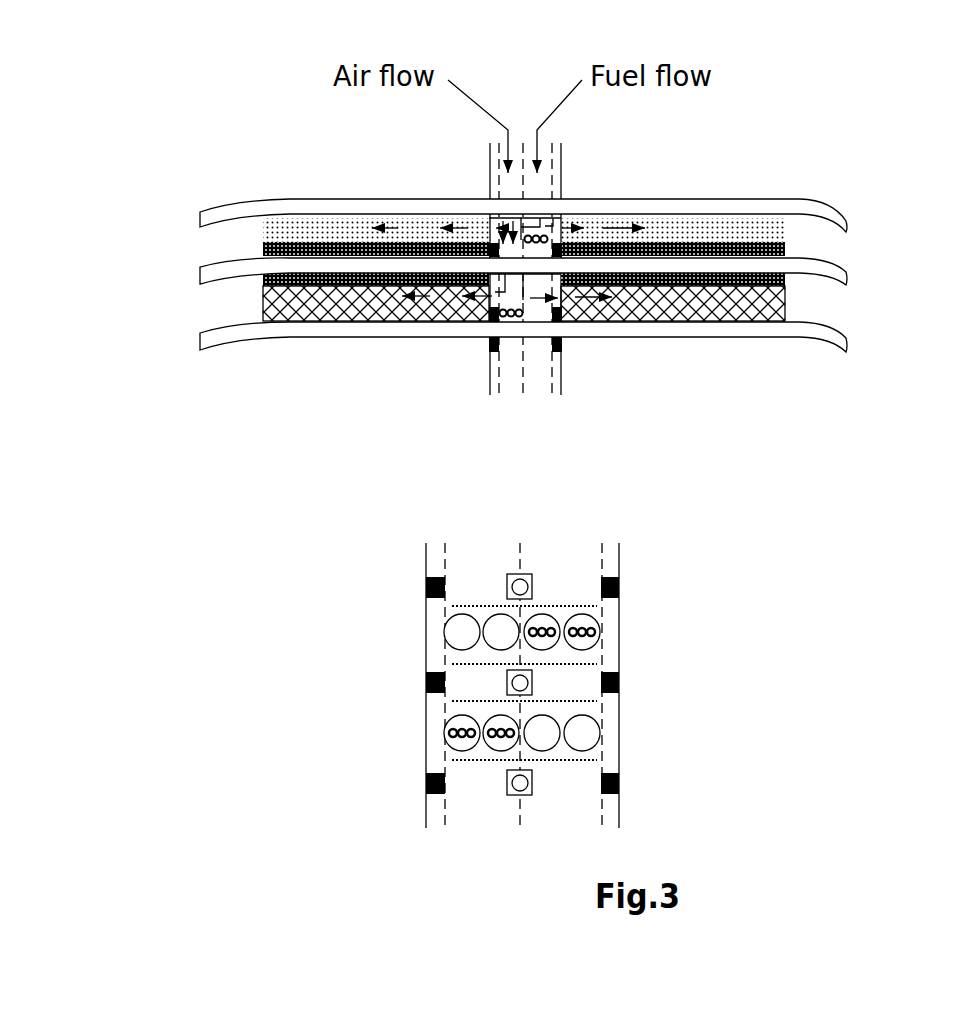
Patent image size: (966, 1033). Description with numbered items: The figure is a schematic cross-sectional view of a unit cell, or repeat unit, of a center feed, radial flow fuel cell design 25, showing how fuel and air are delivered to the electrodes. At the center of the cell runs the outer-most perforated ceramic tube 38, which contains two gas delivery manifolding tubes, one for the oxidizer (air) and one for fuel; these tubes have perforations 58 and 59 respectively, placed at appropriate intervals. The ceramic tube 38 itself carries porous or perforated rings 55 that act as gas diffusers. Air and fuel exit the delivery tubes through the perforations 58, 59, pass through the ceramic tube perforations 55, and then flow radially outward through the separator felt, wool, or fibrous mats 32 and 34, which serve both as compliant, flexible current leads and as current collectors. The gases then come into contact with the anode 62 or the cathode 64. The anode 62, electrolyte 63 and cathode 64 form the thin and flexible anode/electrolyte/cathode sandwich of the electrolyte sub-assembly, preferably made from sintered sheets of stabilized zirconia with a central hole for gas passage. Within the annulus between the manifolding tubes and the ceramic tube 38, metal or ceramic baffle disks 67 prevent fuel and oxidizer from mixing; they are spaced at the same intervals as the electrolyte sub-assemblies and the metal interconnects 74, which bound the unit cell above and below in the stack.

The center feed fuel cell design 25 is at (747, 177).
The compliant current lead 32 is at (226, 238).
The compliant current lead 34 is at (228, 303).
The perforated ceramic tube 38 is at (563, 384).
The porous or perforated rings 55 is at (581, 733).
The perforations 58 is at (446, 725).
The perforations 59 is at (585, 630).
The anode 62 is at (787, 249).
The electrolyte 63 is at (851, 268).
The cathode 64 is at (787, 287).
The baffle disks 67 is at (549, 320).
The metal interconnects 74 is at (285, 198).